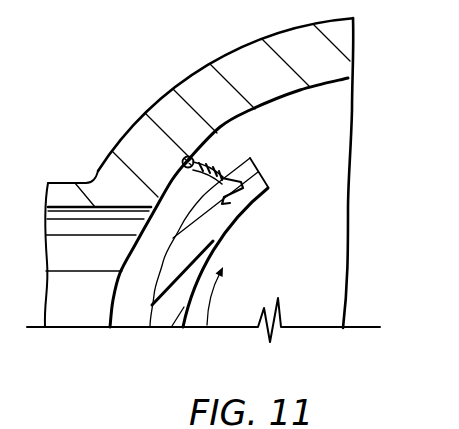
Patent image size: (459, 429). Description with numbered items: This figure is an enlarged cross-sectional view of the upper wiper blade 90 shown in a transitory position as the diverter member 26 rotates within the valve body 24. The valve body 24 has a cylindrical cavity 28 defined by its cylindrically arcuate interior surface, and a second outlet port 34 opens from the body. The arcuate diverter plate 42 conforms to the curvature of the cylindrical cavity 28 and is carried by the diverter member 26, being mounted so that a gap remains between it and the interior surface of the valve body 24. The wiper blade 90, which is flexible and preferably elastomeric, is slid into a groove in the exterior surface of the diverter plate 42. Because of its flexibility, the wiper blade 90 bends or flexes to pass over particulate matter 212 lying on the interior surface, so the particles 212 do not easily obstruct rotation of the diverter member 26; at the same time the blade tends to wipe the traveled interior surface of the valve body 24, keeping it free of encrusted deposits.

The valve body 24 is at (237, 54).
The cylindrical cavity 28 is at (333, 117).
The second outlet port 34 is at (57, 180).
The particulate matter 212 is at (186, 157).
The wiper blade 90 is at (244, 200).
The arcuate diverter plate 42 is at (262, 175).
The diverter member 26 is at (205, 239).